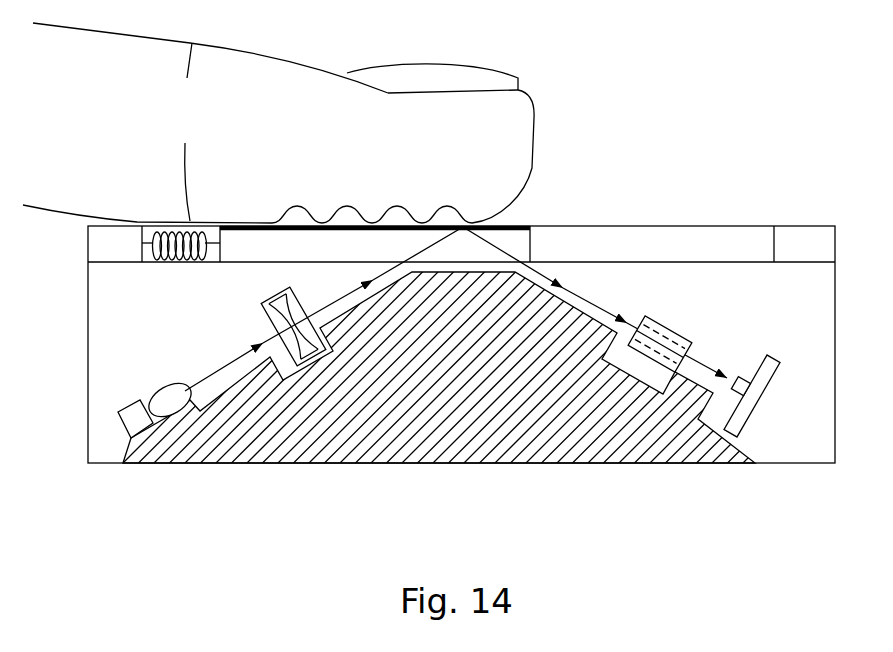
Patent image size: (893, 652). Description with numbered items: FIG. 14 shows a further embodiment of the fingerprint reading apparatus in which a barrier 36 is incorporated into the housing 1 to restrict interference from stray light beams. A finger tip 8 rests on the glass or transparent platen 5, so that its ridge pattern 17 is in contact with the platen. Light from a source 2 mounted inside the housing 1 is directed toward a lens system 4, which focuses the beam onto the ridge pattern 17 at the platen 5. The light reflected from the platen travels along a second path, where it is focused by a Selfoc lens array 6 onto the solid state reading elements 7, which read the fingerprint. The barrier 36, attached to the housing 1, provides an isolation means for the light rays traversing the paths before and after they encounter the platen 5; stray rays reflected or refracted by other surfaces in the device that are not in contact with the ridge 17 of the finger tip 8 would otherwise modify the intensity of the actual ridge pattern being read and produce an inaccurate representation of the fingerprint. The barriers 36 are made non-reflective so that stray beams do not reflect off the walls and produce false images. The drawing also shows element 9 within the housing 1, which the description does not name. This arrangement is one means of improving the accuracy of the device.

The housing 1 is at (83, 342).
The light source 2 is at (168, 418).
The lens system 4 is at (307, 367).
The transparent platen 5 is at (526, 242).
The Selfoc lens array 6 is at (679, 328).
The solid state reading elements 7 is at (745, 373).
The finger tip 8 is at (535, 108).
The spring 9 is at (157, 224).
The ridge pattern 17 is at (400, 201).
The barrier 36 is at (240, 361).